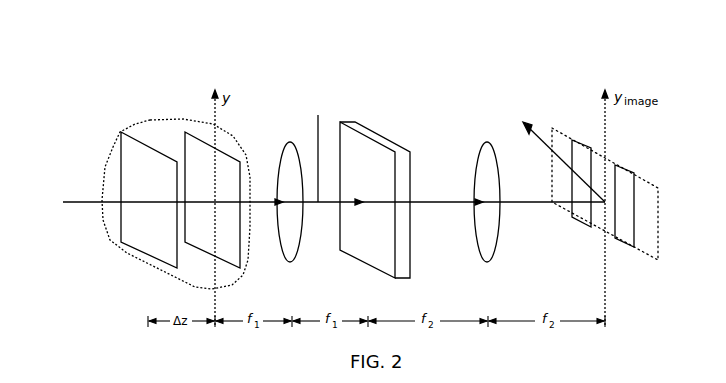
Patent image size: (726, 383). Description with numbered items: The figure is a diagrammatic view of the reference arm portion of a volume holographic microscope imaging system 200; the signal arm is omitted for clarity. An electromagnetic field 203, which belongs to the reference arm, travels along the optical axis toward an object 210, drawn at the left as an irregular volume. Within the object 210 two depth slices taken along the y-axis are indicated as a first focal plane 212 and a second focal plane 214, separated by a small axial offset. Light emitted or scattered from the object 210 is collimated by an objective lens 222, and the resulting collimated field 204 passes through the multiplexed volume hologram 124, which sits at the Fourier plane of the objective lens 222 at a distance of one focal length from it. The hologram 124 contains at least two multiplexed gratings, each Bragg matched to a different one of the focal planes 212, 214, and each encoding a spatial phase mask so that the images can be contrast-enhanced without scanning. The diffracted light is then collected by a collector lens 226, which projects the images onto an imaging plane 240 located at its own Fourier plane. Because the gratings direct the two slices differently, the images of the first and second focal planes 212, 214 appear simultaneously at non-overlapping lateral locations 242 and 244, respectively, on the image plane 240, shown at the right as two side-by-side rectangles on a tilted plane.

The imaging system 200 is at (561, 60).
The electromagnetic field 203 is at (70, 201).
The collimated field 204 is at (318, 116).
The object 210 is at (148, 118).
The first focal plane 212 is at (121, 160).
The second focal plane 214 is at (197, 138).
The objective lens 222 is at (290, 142).
The multiplexed volume hologram 124 is at (367, 137).
The collector lens 226 is at (487, 142).
The imaging plane 240 is at (657, 263).
The lateral location of first focal plane image 242 is at (578, 140).
The lateral location of second focal plane image 244 is at (618, 165).